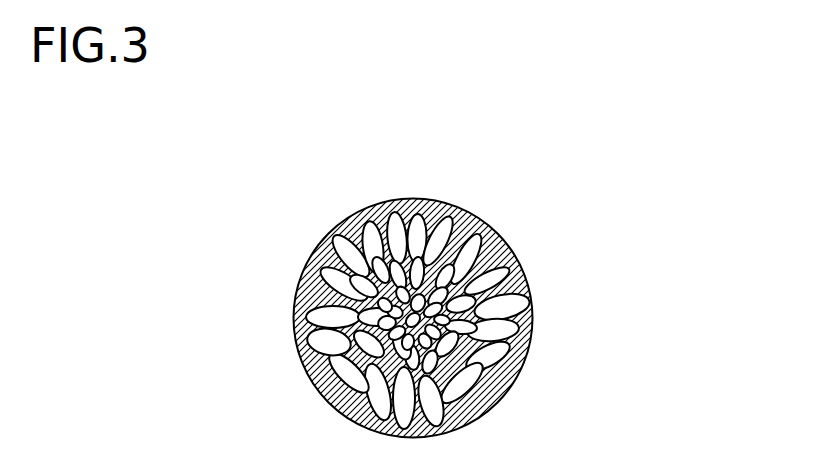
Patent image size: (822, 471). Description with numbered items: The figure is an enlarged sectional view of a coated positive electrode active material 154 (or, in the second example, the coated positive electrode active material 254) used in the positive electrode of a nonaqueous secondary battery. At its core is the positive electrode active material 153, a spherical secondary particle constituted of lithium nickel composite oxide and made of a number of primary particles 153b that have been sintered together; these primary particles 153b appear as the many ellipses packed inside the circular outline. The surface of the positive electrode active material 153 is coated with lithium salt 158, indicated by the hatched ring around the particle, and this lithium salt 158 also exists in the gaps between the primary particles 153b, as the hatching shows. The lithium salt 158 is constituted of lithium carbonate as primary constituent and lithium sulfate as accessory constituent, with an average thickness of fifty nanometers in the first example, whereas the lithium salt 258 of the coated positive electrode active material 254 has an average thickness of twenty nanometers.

The coated positive electrode active material 154 is at (320, 189).
The coated positive electrode active material 254 is at (492, 318).
The lithium salt 158 is at (522, 271).
The lithium salt 258 is at (413, 318).
The positive electrode active material 153 is at (513, 296).
The primary particles 153b is at (483, 387).